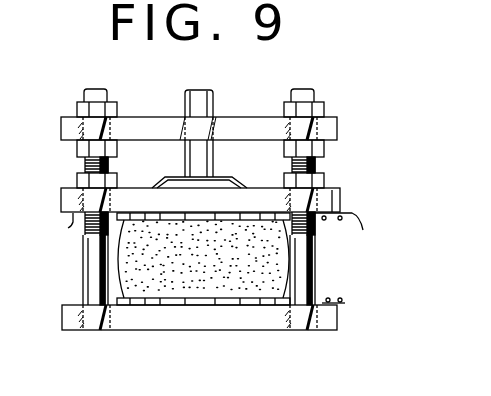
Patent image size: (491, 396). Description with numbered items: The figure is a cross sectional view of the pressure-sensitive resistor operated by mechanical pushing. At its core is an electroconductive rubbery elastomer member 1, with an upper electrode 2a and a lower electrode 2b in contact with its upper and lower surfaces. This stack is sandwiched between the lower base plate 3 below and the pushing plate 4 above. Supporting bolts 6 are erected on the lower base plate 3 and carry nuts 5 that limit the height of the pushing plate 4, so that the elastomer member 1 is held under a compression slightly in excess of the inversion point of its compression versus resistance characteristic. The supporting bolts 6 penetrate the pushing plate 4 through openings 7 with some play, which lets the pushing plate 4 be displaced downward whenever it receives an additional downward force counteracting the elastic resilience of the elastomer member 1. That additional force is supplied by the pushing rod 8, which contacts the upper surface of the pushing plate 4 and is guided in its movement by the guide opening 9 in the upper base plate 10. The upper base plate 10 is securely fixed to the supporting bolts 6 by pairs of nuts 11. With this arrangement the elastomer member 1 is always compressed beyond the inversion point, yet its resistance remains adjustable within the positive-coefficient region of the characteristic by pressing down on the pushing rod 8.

The electroconductive rubbery elastomer member 1 is at (133, 272).
The upper electrode 2a is at (262, 212).
The lower electrode 2b is at (256, 306).
The lower base plate 3 is at (330, 318).
The pushing plate 4 is at (341, 197).
The nut 5 is at (74, 181).
The supporting bolt 6 is at (78, 166).
The opening 7 is at (62, 231).
The pushing rod 8 is at (185, 100).
The guide opening 9 is at (182, 130).
The upper base plate 10 is at (330, 123).
The nuts 11 is at (77, 110).